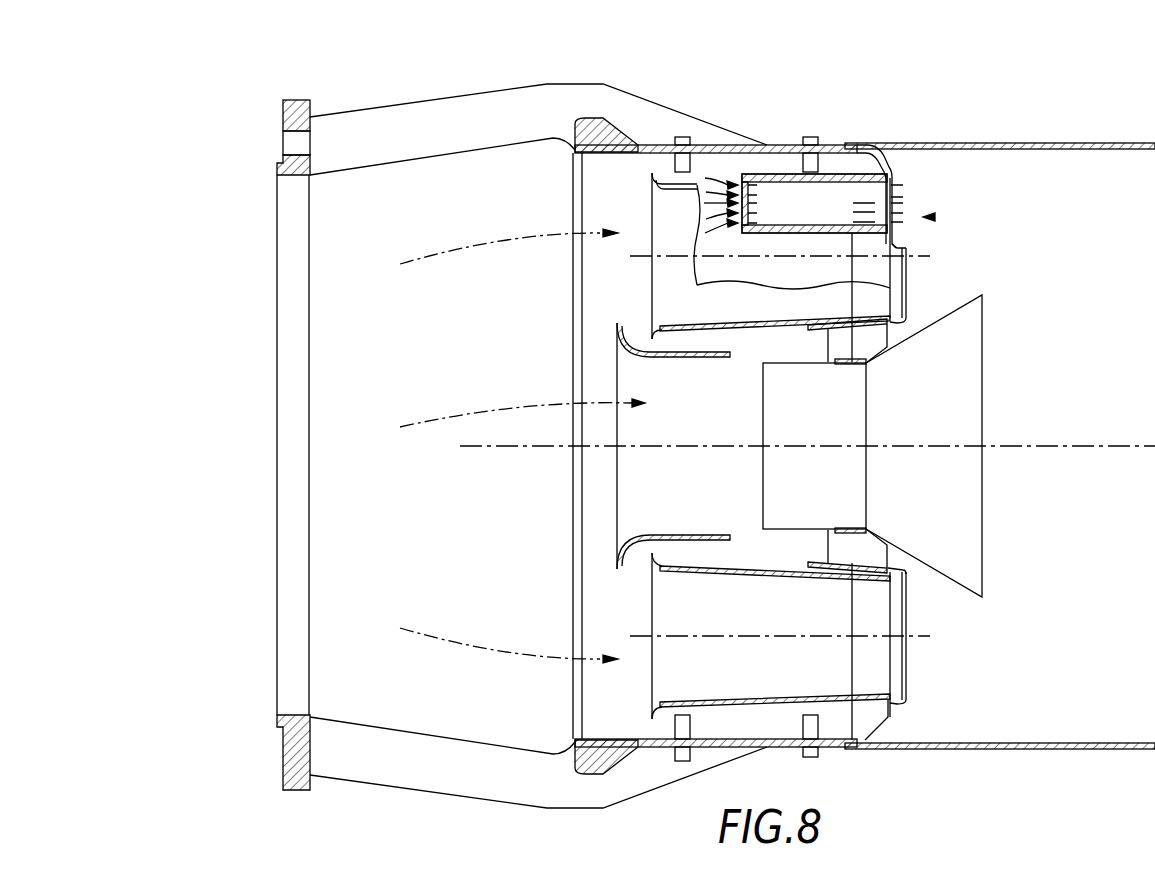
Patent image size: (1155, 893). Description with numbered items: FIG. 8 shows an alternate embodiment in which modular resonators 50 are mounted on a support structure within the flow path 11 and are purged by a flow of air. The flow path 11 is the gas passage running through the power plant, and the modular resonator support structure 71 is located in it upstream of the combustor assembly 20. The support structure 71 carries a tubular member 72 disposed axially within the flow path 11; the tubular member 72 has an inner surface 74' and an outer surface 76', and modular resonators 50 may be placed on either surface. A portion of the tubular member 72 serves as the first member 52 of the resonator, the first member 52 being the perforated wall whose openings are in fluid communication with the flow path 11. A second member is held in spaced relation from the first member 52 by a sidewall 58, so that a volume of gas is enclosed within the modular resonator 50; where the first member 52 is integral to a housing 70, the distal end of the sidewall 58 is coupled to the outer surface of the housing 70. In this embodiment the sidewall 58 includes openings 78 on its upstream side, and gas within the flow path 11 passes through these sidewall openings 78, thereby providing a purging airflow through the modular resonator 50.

The flow path 11 is at (243, 365).
The combustor assembly 20 is at (380, 82).
The modular resonator 50 is at (838, 156).
The first member 52 is at (847, 200).
The sidewall 58 is at (780, 174).
The housing 70 is at (935, 217).
The modular resonator support structure 71 is at (893, 237).
The tubular member 72 is at (901, 706).
The inner surface 74' is at (771, 646).
The outer surface 76' is at (775, 556).
The openings 78 is at (745, 178).